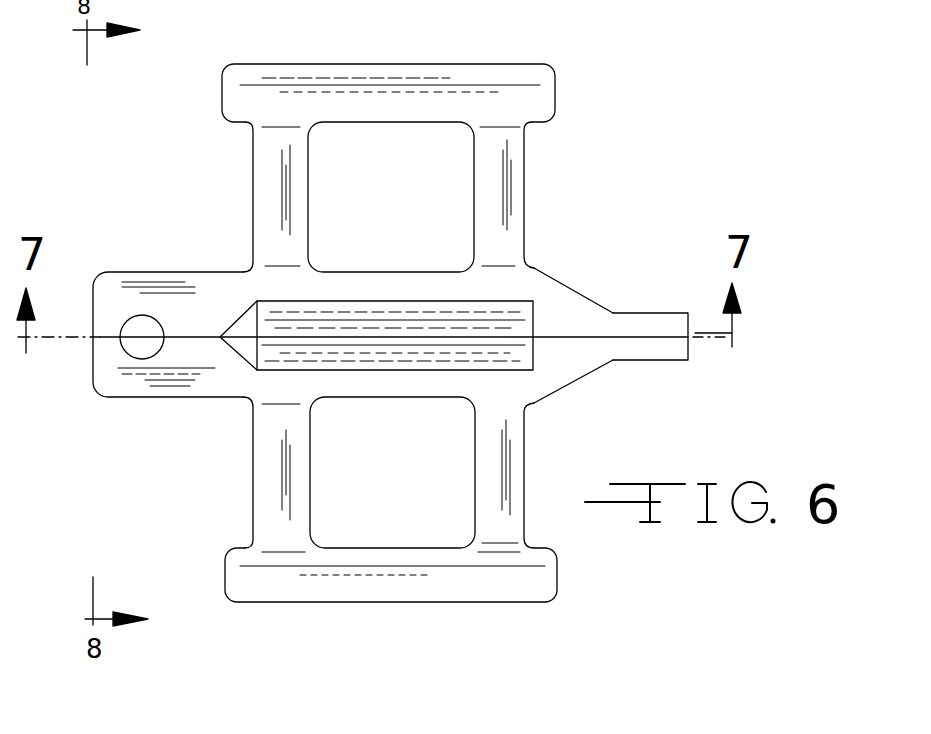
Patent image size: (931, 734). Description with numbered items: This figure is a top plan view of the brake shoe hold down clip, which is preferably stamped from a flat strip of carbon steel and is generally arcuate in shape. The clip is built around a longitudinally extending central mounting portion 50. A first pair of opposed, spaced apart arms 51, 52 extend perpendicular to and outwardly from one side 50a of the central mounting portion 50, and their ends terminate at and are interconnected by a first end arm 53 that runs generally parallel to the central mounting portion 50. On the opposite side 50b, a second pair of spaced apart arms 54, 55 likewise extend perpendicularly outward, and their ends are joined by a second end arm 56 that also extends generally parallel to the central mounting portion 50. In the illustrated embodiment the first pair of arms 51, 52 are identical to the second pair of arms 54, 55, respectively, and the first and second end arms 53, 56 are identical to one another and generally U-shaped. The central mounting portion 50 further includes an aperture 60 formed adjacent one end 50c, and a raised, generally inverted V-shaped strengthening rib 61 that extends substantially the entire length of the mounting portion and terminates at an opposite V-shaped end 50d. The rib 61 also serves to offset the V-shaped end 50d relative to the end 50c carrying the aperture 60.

The central mounting portion 50 is at (223, 378).
The one side of the central mounting portion 50a is at (370, 270).
The opposite side of the central mounting portion 50b is at (388, 397).
The one end of the central mounting portion 50c is at (90, 372).
The V-shaped end 50d is at (690, 348).
The first arm 51 is at (525, 162).
The first arm 52 is at (270, 192).
The first end arm 53 is at (381, 82).
The second arm 54 is at (517, 455).
The second arm 55 is at (268, 485).
The second end arm 56 is at (370, 588).
The aperture 60 is at (145, 320).
The strengthening rib 61 is at (517, 313).